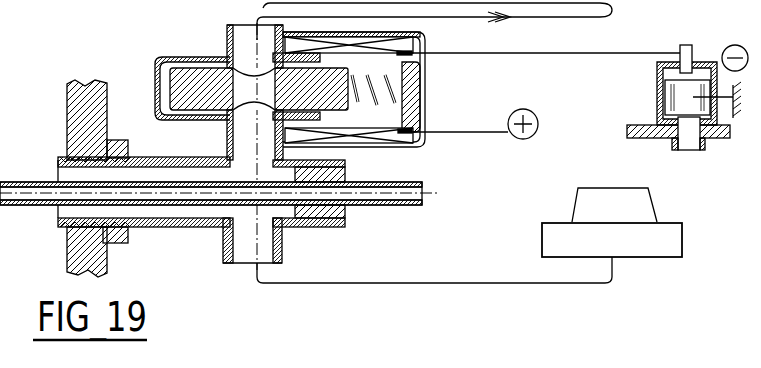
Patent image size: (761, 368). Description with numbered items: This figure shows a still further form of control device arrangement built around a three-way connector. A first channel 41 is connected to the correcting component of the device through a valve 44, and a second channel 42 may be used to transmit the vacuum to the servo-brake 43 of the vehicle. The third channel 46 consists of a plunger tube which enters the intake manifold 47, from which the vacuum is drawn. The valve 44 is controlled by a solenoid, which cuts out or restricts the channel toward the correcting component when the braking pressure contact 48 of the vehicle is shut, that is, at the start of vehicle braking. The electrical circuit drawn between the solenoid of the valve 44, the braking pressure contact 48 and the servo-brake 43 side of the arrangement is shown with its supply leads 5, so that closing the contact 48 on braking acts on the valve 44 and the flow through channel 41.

The electrical supply wires 5 is at (400, 44).
The channel 41 is at (246, 138).
The channel 42 is at (243, 248).
The servo-brake 43 is at (622, 253).
The valve 44 is at (212, 95).
The third channel 46 is at (375, 192).
The intake manifold 47 is at (68, 125).
The braking pressure contact 48 is at (657, 108).